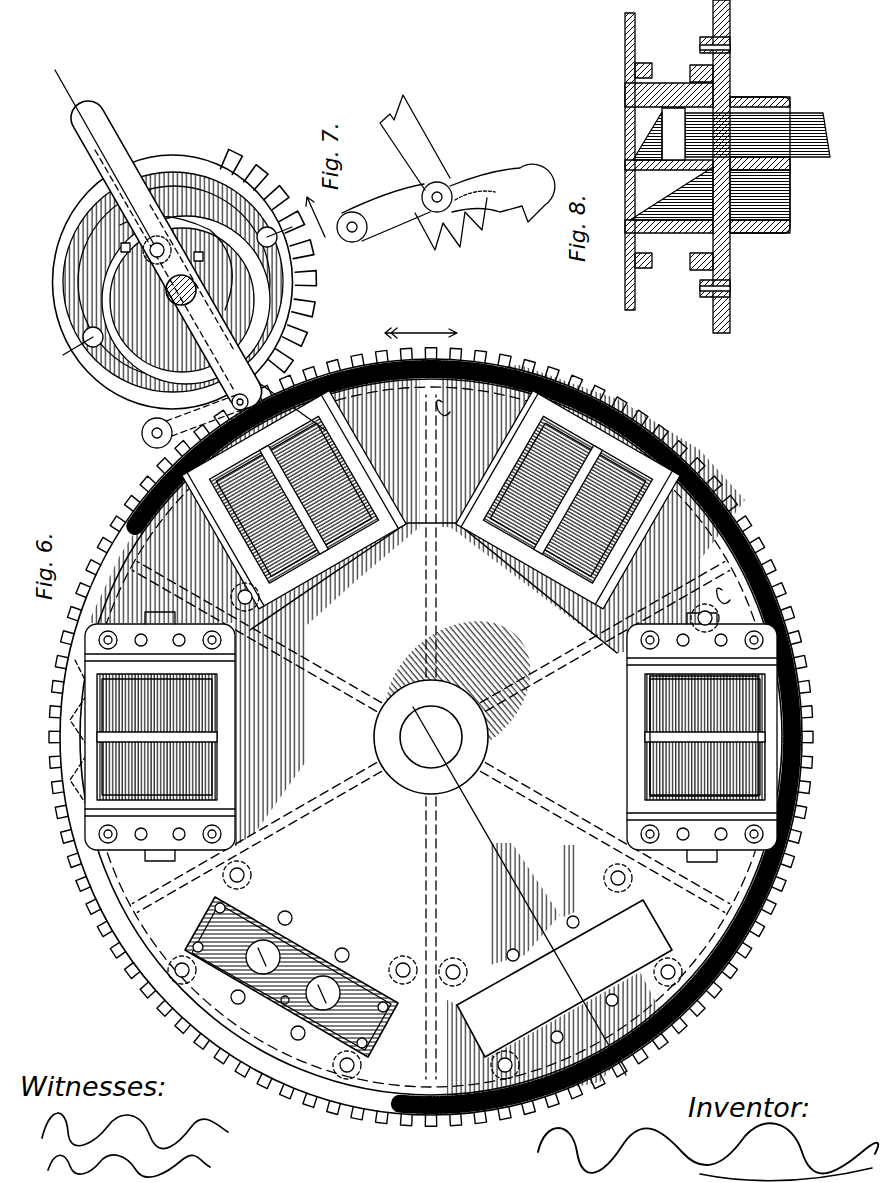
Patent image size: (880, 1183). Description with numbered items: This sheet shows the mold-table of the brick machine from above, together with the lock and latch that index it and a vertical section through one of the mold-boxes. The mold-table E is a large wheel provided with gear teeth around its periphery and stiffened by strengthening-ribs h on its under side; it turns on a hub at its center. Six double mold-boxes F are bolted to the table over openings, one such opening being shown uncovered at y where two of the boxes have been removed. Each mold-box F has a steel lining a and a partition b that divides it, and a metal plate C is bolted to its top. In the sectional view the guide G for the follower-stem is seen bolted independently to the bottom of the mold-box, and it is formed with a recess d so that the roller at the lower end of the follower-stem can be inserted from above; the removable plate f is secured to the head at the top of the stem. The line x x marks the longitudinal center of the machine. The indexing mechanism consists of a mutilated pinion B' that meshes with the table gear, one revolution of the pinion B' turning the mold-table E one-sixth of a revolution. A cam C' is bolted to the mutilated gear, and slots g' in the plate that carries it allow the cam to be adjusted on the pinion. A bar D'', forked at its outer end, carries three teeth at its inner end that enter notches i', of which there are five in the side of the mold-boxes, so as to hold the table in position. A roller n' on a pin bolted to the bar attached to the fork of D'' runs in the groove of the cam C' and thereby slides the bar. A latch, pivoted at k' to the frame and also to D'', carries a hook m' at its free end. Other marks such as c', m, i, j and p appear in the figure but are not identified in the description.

In FIG. 6, the mold-table E is at (462, 652).
In FIG. 7, the mold-table E is at (166, 254).
In FIG. 6, the mold-box F is at (318, 560).
In FIG. 8, the mold-box F is at (650, 252).
In FIG. 6, the metal plate C is at (575, 505).
In FIG. 6, the partition b is at (646, 698).
In FIG. 8, the partition b is at (624, 164).
In FIG. 6, the recess d is at (291, 977).
In FIG. 6, the opening y is at (588, 1000).
In FIG. 6, the pin p is at (285, 1005).
In FIG. 6, the line x x is at (526, 901).
In FIG. 7, the line x x is at (100, 152).
In FIG. 7, the mutilated pinion B' is at (185, 259).
In FIG. 7, the cam C' is at (174, 243).
In FIG. 7, the cam groove c' is at (223, 263).
In FIG. 7, the slot g' is at (163, 254).
In FIG. 7, the roller n' is at (301, 228).
In FIG. 7, the pivot k' is at (214, 415).
In FIG. 7, the direction arrow m is at (397, 324).
In FIG. 7, the pawl i is at (321, 252).
In FIG. 7, the link j is at (383, 213).
In FIG. 7, the notch i' is at (406, 185).
In FIG. 7, the bar D'' is at (415, 142).
In FIG. 7, the hook m' is at (502, 193).
In FIG. 8, the steel lining a is at (624, 100).
In FIG. 8, the removable plate f is at (664, 140).
In FIG. 8, the strengthening-rib h is at (757, 135).
In FIG. 8, the guide G is at (752, 233).